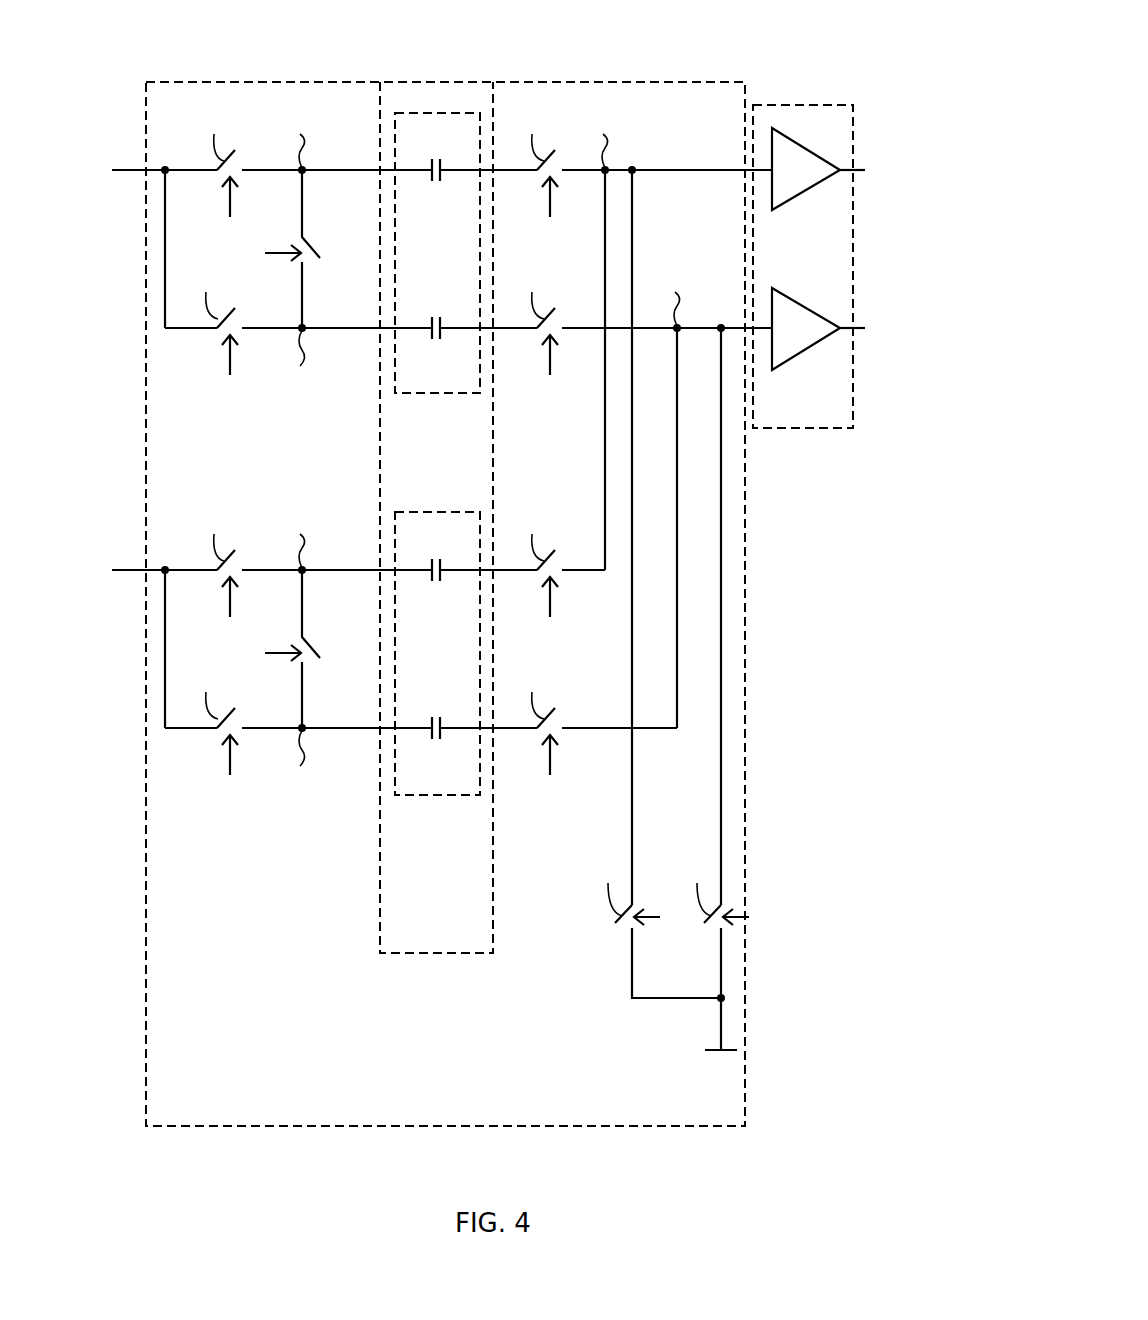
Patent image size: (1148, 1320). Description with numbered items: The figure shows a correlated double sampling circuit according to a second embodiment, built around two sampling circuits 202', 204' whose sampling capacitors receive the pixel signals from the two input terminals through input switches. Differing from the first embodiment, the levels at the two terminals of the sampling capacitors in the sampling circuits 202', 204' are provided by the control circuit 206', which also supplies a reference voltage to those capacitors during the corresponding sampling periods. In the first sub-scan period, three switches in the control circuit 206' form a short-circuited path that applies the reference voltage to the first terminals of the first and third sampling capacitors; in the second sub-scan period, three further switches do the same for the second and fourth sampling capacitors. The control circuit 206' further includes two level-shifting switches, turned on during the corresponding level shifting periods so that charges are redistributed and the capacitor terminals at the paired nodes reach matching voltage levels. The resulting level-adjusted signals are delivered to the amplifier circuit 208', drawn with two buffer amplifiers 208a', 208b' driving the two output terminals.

The sampling circuit 202' is at (437, 218).
The sampling circuit 204' is at (437, 619).
The control circuit 206' is at (445, 569).
The amplifier circuit 208' is at (803, 233).
The first buffer amplifier 208a' is at (812, 191).
The second buffer amplifier 208b' is at (812, 350).